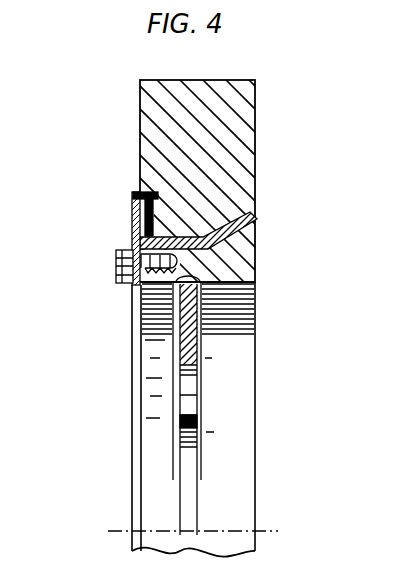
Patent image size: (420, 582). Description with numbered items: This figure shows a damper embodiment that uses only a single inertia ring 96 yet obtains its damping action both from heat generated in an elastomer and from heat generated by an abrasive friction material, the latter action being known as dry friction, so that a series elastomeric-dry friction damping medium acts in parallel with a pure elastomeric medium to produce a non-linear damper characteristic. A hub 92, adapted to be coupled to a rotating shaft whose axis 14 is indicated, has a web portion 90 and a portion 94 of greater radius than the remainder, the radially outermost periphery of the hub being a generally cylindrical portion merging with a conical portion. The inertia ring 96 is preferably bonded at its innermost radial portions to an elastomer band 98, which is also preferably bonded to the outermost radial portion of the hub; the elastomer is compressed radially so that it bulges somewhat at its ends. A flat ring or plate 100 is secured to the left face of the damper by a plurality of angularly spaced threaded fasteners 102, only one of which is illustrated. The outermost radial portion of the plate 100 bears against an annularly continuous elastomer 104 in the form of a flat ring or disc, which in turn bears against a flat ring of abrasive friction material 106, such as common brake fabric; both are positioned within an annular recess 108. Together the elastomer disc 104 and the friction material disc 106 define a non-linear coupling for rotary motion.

The centerline axis 14 is at (110, 524).
The web portion 90 is at (192, 333).
The hub 92 is at (165, 280).
The portion of hub of greater radius 94 is at (234, 246).
The inertia ring 96 is at (211, 161).
The elastomer band 98 is at (253, 220).
The flat ring or plate 100 is at (133, 376).
The threaded fasteners 102 is at (118, 265).
The elastomer 104 is at (136, 214).
The friction material 106 is at (144, 196).
The annular recess 108 is at (140, 194).